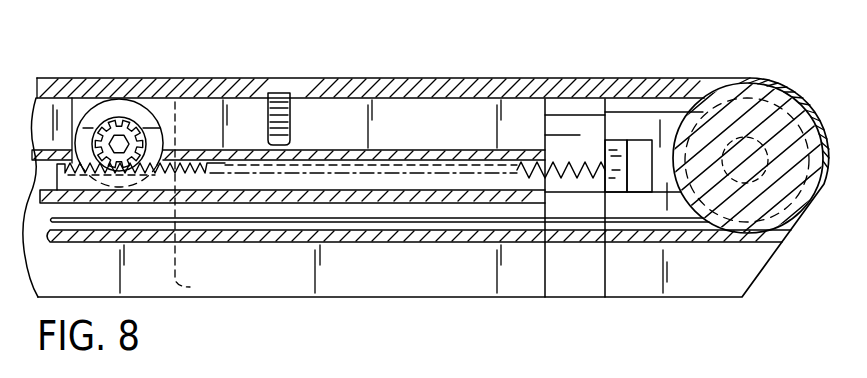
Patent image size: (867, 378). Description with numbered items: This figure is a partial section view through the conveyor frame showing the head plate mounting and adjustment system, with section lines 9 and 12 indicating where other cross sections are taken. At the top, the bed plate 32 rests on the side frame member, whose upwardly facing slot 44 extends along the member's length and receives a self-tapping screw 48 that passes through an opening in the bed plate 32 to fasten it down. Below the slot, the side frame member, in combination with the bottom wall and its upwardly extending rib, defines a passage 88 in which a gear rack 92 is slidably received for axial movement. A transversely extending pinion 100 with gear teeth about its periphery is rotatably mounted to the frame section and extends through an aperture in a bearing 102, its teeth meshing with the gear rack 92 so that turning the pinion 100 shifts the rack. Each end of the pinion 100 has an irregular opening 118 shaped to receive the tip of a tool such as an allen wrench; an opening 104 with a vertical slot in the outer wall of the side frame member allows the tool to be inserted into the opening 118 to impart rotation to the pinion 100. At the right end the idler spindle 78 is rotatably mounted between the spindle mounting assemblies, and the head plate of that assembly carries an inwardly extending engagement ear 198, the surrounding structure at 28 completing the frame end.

The section line 9- 9 is at (32, 145).
The section line 12- 12 is at (703, 23).
The housing 28 is at (483, 75).
The bed plate 32 is at (518, 80).
The upwardly facing slot 44 is at (335, 113).
The self-tapping screw 48 is at (290, 118).
The idler spindle 78 is at (760, 92).
The passage 88 is at (43, 172).
The gear rack 92 is at (213, 152).
The pinion 100 is at (140, 128).
The bearing 102 is at (88, 106).
The opening 104 is at (82, 77).
The irregular opening 118 is at (118, 136).
The engagement ear 198 is at (617, 163).